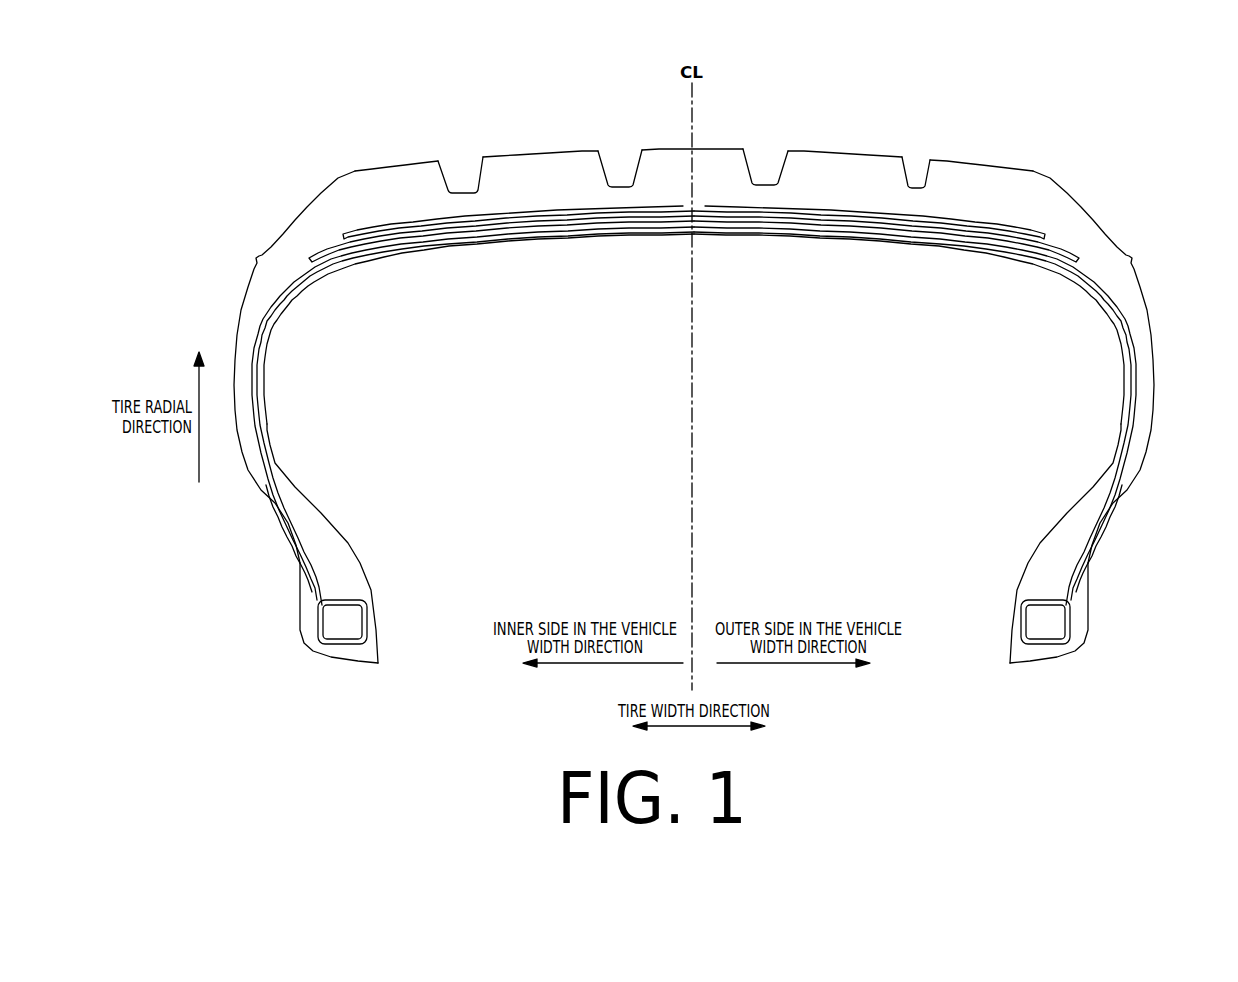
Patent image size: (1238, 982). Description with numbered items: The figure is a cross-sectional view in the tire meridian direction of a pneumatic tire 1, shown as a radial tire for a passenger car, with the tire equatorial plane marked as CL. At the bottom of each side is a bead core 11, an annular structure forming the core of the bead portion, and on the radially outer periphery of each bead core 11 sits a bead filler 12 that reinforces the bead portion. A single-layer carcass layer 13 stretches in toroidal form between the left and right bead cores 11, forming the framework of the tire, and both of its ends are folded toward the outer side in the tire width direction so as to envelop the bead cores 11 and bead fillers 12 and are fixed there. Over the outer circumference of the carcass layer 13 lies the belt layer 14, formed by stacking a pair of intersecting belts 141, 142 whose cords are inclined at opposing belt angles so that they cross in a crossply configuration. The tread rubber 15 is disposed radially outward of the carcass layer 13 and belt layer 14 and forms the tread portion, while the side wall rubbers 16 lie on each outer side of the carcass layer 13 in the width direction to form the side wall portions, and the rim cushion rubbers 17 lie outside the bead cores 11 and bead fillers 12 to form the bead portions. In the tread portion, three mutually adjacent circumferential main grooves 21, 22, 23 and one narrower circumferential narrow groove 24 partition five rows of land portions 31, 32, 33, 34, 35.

The pneumatic tire 1 is at (696, 362).
The bead core 11 is at (353, 625).
The bead filler 12 is at (342, 578).
The carcass layer 13 is at (1130, 362).
The belt layer 14 is at (694, 281).
The intersecting belt 141 is at (997, 235).
The intersecting belt 142 is at (962, 227).
The tread rubber 15 is at (705, 147).
The side wall rubber 16 is at (1153, 333).
The rim cushion rubber 17 is at (302, 565).
The circumferential main groove 21 is at (465, 165).
The circumferential main groove 22 is at (620, 158).
The circumferential main groove 23 is at (762, 158).
The circumferential narrow groove 24 is at (917, 160).
The land portion 31 is at (425, 158).
The land portion 32 is at (553, 162).
The land portion 33 is at (712, 150).
The land portion 34 is at (833, 150).
The land portion 35 is at (953, 157).